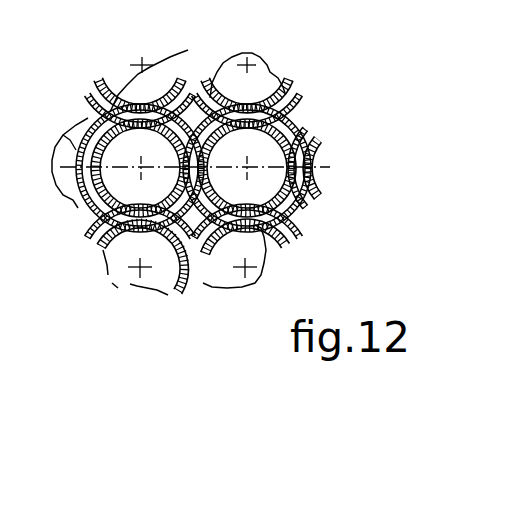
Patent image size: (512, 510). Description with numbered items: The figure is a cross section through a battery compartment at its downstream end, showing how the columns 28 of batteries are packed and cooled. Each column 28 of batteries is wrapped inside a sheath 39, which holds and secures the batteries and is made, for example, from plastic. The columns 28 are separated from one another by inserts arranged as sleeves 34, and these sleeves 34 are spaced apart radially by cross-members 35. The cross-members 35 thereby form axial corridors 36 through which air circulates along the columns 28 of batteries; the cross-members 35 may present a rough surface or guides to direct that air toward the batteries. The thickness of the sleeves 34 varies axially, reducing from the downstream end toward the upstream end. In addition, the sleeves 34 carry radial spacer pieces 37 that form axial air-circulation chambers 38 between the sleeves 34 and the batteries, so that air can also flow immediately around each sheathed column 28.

The column of batteries 28 is at (156, 155).
The sleeve 34 is at (304, 194).
The cross-member 35 is at (306, 116).
The axial corridor 36 is at (298, 135).
The radial spacer piece 37 is at (86, 134).
The axial air-circulation chamber 38 is at (91, 208).
The sheath 39 is at (268, 186).